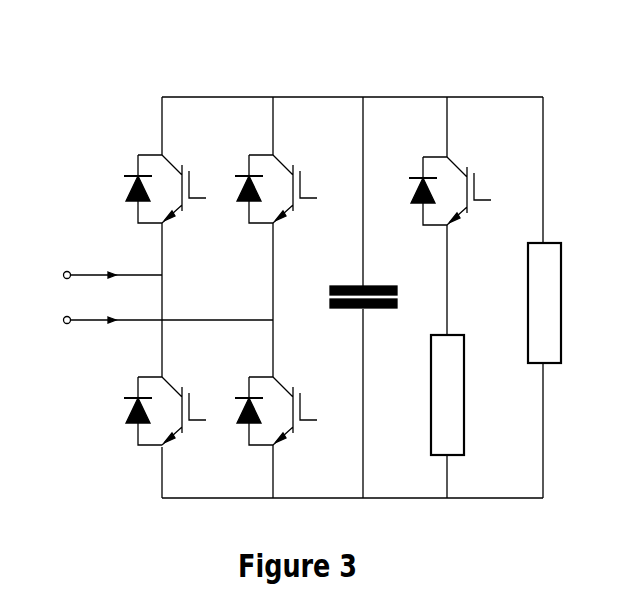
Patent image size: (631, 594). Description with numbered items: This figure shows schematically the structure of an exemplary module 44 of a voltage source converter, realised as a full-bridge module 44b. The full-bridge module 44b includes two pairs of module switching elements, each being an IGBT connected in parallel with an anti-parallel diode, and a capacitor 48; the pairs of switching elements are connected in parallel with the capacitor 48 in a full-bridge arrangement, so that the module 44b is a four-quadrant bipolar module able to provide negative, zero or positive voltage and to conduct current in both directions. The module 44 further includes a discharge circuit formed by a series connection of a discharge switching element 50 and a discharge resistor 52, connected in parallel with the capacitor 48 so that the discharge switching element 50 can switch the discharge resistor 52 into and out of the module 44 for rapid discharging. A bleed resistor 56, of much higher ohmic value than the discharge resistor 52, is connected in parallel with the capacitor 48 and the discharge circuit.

The module 44 is at (352, 262).
The full-bridge module 44b is at (332, 86).
The capacitor 48 is at (348, 313).
The discharge switching element 50 is at (438, 213).
The discharge resistor 52 is at (447, 382).
The bleed resistor 56 is at (540, 317).